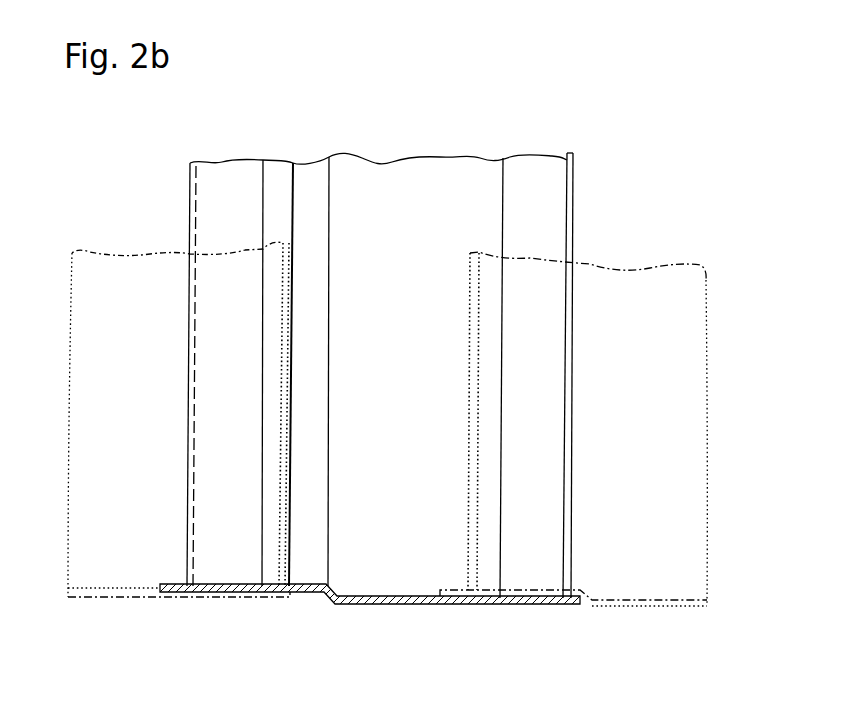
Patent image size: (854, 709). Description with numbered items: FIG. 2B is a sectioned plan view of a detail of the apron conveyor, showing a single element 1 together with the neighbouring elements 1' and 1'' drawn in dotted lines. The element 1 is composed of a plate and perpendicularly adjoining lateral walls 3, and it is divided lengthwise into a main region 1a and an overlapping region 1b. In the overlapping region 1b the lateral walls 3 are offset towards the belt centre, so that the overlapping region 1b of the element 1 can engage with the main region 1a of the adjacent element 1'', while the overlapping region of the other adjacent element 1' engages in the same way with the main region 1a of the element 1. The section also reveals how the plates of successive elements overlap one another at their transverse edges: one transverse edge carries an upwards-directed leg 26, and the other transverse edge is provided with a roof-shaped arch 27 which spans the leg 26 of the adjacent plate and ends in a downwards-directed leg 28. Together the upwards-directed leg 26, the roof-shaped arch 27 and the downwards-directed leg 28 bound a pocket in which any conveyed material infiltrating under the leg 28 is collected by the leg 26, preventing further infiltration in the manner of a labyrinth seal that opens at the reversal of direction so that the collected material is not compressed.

The element 1 is at (378, 327).
The adjacent element 1' is at (173, 378).
The adjacent element 1'' is at (588, 394).
The main region 1a is at (412, 470).
The overlapping region 1b is at (238, 476).
The lateral wall 3 is at (355, 605).
The upwards-directed leg 26 is at (573, 178).
The roof-shaped arch 27 is at (233, 179).
The downwards-directed leg 28 is at (190, 187).